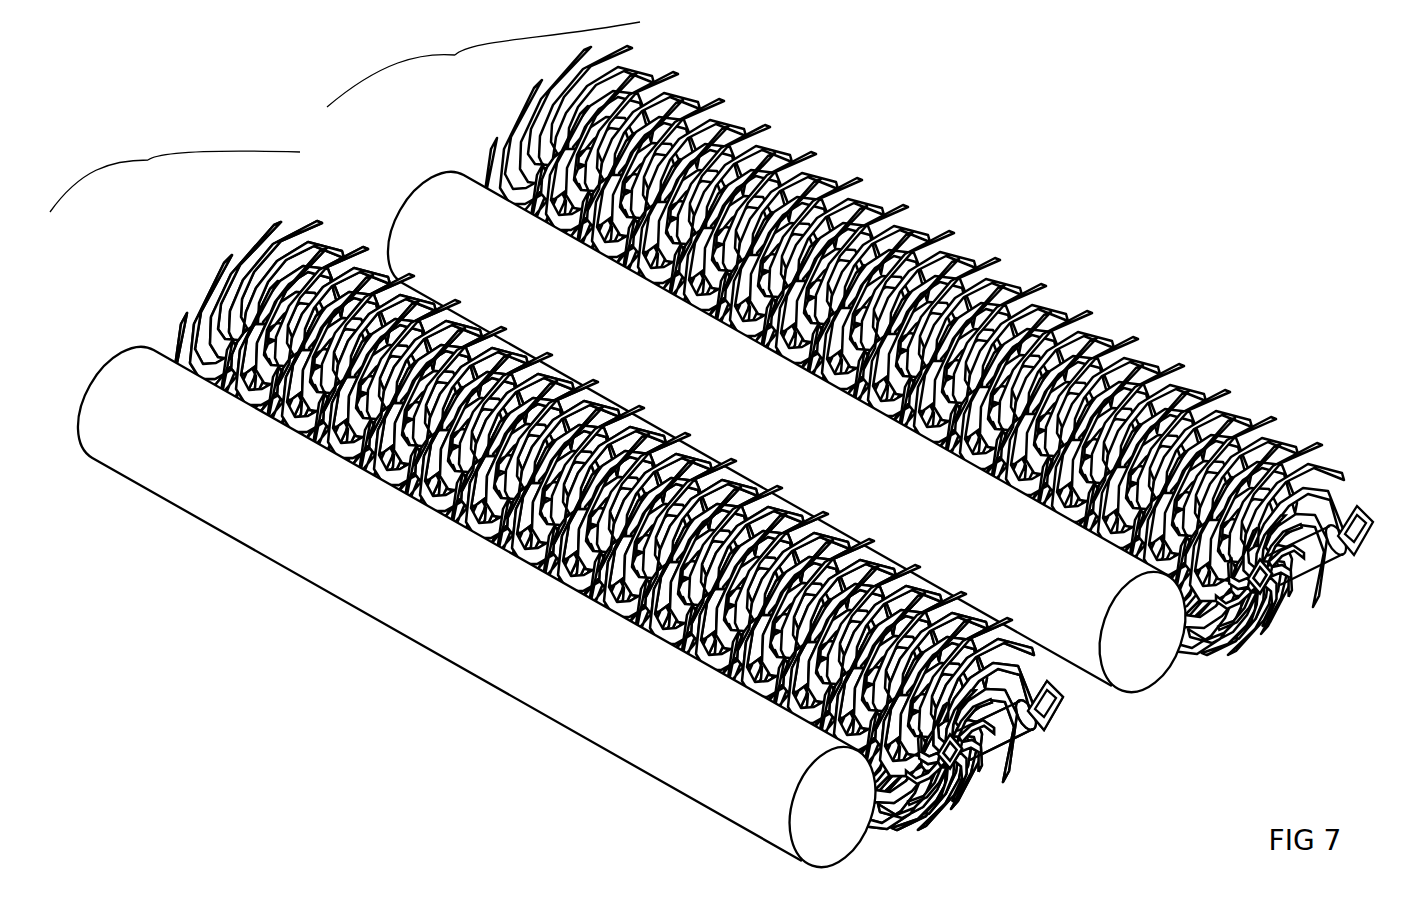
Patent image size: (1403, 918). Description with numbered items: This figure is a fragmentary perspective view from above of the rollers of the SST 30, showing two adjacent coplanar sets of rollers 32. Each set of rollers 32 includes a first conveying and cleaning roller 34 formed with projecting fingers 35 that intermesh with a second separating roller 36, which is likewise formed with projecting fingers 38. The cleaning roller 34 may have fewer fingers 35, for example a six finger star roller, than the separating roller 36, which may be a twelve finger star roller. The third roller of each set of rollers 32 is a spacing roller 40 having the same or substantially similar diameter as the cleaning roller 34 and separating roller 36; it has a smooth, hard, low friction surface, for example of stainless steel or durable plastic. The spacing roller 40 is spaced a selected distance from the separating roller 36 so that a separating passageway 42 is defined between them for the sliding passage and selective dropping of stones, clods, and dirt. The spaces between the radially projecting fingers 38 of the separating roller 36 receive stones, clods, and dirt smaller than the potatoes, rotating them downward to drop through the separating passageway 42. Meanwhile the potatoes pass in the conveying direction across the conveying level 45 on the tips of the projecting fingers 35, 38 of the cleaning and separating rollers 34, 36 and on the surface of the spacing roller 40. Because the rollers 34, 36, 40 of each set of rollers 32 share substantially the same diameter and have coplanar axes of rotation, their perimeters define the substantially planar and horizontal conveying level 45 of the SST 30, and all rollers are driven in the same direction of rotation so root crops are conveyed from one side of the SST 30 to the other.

The SST 30 is at (899, 143).
The set of rollers 32 is at (345, 113).
The first conveying and cleaning roller 34 is at (1356, 562).
The projecting fingers 35 is at (960, 228).
The second separating roller 36 is at (1281, 636).
The projecting fingers 38 is at (534, 98).
The spacing roller 40 is at (418, 185).
The separating passageway 42 is at (461, 157).
The conveying level 45 is at (696, 371).